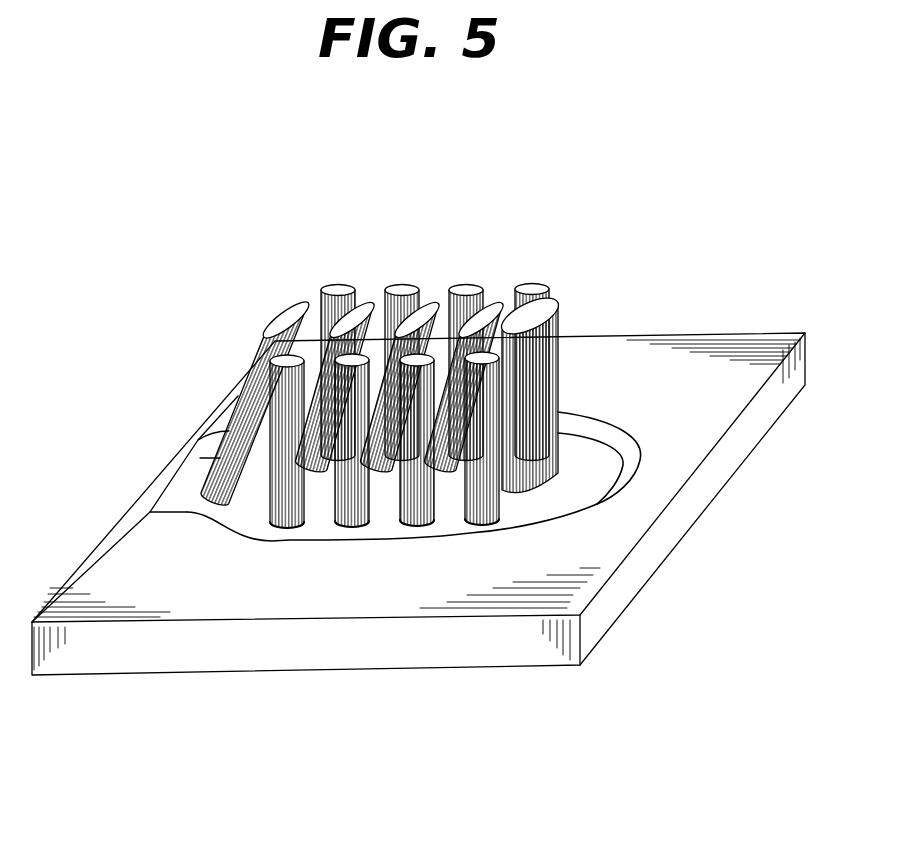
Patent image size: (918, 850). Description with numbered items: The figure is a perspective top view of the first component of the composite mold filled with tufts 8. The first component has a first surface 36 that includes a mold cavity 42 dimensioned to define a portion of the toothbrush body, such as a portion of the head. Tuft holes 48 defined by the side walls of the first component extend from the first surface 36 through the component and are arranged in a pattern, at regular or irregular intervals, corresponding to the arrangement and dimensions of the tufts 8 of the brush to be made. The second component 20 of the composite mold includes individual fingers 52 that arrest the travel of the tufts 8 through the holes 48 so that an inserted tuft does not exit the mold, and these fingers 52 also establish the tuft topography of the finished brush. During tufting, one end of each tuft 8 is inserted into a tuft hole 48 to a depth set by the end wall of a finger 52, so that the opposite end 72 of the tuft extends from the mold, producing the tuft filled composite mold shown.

The tuft 8 is at (503, 500).
The second component 20 is at (396, 438).
The first surface 36 is at (594, 549).
The mold cavity 42 is at (190, 492).
The tuft hole 48 is at (403, 515).
The finger 52 is at (486, 297).
The opposite end of tuft 72 is at (338, 285).